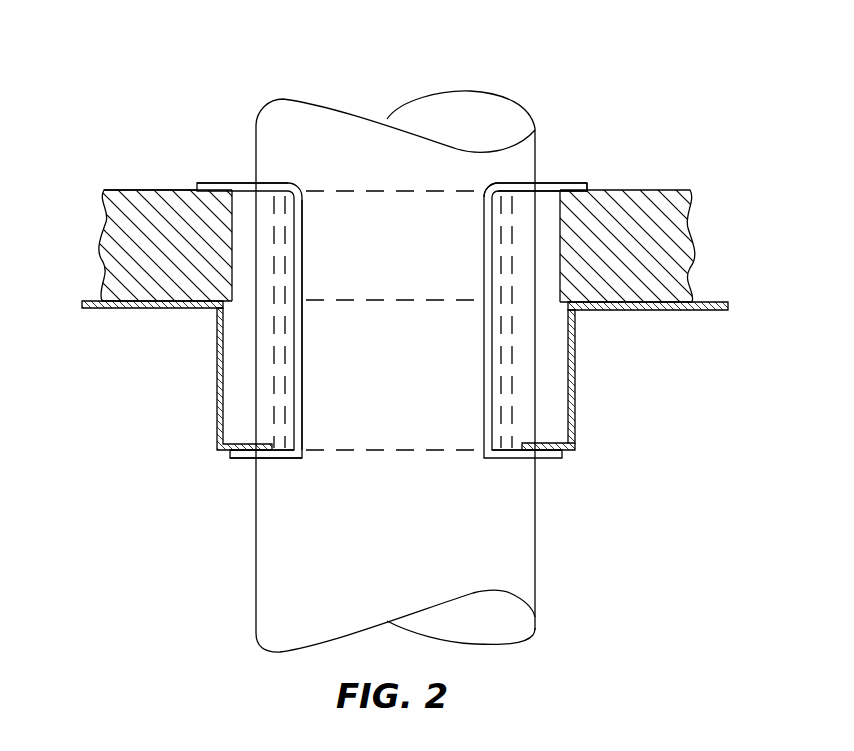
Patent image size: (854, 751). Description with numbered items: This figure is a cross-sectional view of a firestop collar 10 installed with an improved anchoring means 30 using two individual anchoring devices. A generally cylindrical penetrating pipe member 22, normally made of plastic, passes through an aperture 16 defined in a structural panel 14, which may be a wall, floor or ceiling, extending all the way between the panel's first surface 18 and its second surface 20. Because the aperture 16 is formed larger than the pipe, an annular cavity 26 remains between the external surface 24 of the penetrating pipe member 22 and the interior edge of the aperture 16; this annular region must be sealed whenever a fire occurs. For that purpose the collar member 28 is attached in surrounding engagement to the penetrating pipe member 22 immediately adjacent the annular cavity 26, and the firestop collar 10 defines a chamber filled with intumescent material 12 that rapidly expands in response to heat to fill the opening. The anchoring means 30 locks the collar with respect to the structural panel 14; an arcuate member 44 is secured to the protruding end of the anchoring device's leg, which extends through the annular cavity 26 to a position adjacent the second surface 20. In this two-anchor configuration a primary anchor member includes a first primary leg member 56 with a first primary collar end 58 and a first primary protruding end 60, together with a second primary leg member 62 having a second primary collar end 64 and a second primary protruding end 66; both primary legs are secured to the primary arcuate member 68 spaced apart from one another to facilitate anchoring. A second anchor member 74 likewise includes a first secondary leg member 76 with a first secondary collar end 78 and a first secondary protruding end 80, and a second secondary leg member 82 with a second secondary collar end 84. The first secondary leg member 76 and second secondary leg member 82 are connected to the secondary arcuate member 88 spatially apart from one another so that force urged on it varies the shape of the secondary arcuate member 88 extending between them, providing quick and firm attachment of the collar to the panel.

The firestop collar 10 is at (575, 437).
The intumescent material 12 is at (213, 427).
The structural panel 14 is at (657, 247).
The aperture 16 is at (233, 281).
The first surface 18 is at (120, 310).
The second surface 20 is at (127, 189).
The penetrating pipe member 22 is at (385, 584).
The external surface 24 is at (252, 530).
The annular cavity 26 is at (243, 235).
The collar member 28 is at (575, 392).
The anchoring means 30 is at (483, 225).
The arcuate member 44 is at (573, 183).
The first primary leg member 56 is at (302, 382).
The first primary collar end 58 is at (303, 418).
The first primary protruding end 60 is at (293, 257).
The second primary leg member 62 is at (277, 357).
The second primary collar end 64 is at (273, 407).
The second primary protruding end 66 is at (303, 262).
The primary arcuate member 68 is at (268, 185).
The second anchor member 74 is at (510, 187).
The first secondary leg member 76 is at (483, 355).
The first secondary collar end 78 is at (483, 402).
The first secondary protruding end 80 is at (487, 190).
The second secondary leg member 82 is at (497, 275).
The second secondary collar end 84 is at (512, 390).
The secondary arcuate member 88 is at (527, 187).